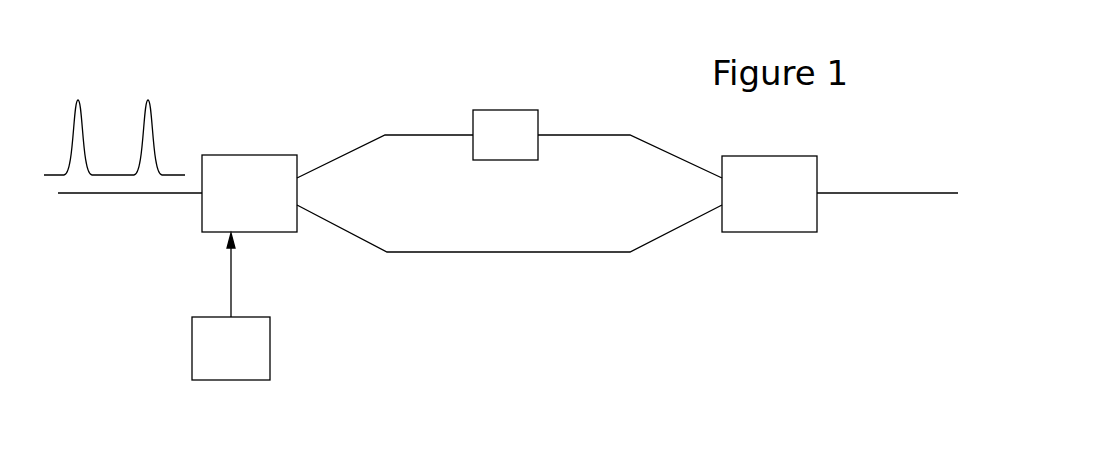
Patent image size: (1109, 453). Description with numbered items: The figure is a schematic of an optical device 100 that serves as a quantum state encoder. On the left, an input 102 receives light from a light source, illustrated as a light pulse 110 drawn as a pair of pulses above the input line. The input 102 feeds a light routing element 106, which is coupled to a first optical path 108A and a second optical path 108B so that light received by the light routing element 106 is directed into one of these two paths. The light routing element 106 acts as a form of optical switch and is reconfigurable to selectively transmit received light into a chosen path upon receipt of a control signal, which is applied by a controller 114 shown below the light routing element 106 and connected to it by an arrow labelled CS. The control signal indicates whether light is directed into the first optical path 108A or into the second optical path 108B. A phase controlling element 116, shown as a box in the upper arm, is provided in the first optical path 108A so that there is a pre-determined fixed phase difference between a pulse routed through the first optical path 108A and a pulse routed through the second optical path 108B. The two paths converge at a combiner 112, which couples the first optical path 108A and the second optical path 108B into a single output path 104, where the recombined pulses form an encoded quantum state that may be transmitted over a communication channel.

The optical device 100 is at (740, 376).
The input 102 is at (130, 208).
The single output path 104 is at (887, 179).
The light routing element 106 is at (249, 193).
The first optical path 108A is at (420, 134).
The second optical path 108B is at (535, 252).
The light pulse 110 is at (114, 134).
The combiner 112 is at (769, 194).
The controller 114 is at (231, 306).
The phase controlling element 116 is at (505, 117).